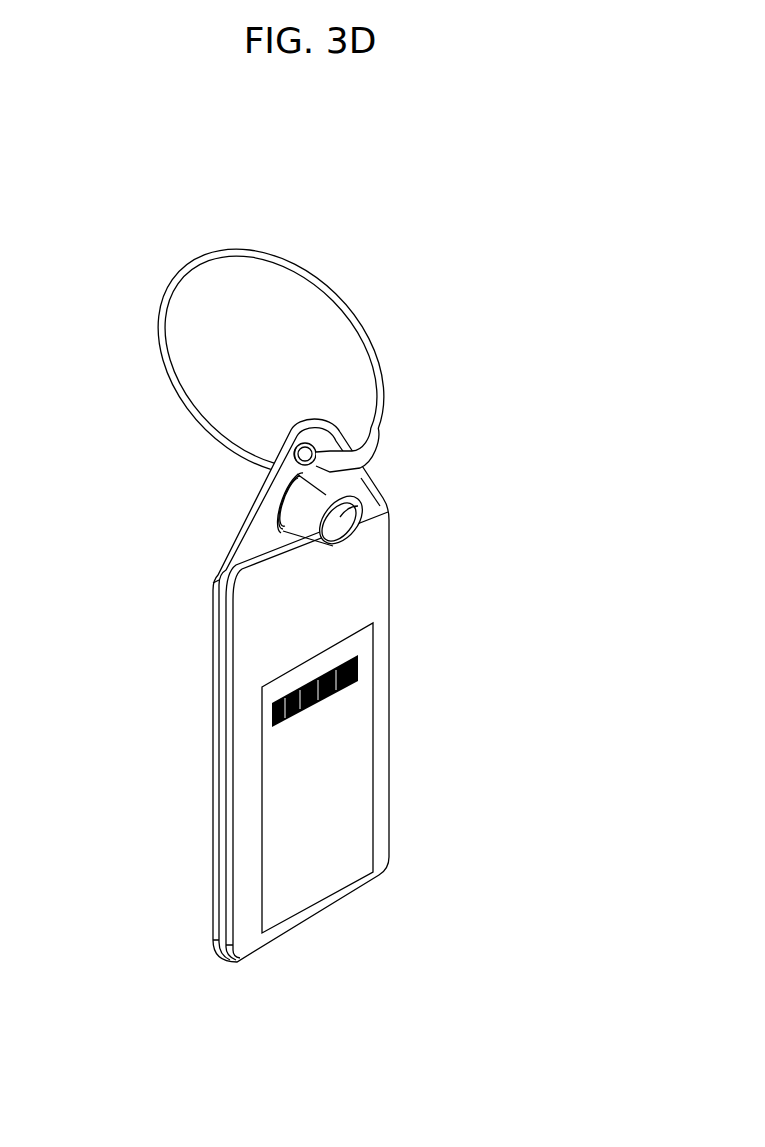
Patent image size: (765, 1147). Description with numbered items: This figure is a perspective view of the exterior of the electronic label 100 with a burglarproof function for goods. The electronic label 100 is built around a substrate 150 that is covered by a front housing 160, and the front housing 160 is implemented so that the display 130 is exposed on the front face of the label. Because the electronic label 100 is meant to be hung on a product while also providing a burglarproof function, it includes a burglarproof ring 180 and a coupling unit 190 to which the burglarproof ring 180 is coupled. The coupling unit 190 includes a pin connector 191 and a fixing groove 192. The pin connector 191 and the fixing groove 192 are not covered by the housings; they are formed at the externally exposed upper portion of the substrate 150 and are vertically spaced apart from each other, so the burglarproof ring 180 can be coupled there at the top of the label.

The electronic label 100 is at (112, 503).
The display 130 is at (360, 707).
The substrate 150 is at (262, 528).
The front housing 160 is at (385, 762).
The burglarproof ring 180 is at (340, 312).
The coupling unit 190 is at (485, 450).
The pin connector 191 is at (363, 503).
The fixing groove 192 is at (357, 450).